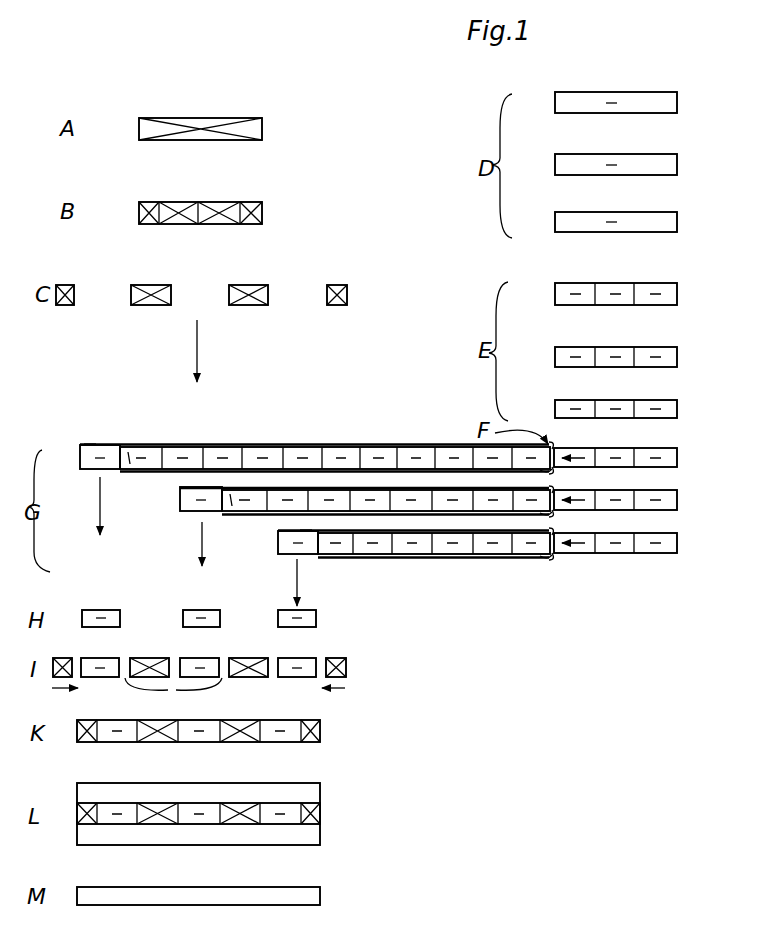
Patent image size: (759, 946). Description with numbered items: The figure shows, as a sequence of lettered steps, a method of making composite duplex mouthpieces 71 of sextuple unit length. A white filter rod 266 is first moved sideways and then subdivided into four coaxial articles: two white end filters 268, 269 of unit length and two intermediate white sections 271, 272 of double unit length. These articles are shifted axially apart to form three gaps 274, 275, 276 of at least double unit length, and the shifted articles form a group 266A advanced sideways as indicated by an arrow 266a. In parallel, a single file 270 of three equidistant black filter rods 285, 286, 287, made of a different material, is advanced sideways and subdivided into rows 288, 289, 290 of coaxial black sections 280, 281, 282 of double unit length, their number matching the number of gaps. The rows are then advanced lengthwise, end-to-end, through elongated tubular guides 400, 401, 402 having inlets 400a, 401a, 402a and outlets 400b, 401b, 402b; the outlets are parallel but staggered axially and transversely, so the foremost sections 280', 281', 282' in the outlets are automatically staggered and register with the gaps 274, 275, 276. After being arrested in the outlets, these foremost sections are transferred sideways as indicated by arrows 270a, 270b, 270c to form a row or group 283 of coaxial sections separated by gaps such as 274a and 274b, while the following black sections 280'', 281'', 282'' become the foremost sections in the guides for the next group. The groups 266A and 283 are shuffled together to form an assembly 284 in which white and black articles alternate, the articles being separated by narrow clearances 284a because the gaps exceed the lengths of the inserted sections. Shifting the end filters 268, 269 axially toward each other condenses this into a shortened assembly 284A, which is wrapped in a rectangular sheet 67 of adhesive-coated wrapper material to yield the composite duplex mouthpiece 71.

The white filter rod 266 is at (209, 122).
The white end filter 268 is at (148, 205).
The intermediate white section 271 is at (180, 210).
The intermediate white section 272 is at (221, 211).
The white end filter 269 is at (252, 208).
The gap 274 is at (119, 304).
The gap 275 is at (219, 304).
The gap 276 is at (316, 304).
The group of white rod-like articles 266A is at (362, 296).
The arrow 266a is at (200, 346).
The single file of black filter rods 270 is at (595, 140).
The black filter rod 285 is at (558, 102).
The black filter rod 286 is at (558, 164).
The black filter rod 287 is at (558, 222).
The stack or row of black sections 288 is at (552, 304).
The stack or row of black sections 289 is at (552, 366).
The stack or row of black sections 290 is at (552, 418).
The black section 280 is at (622, 355).
The black section 281 is at (615, 453).
The black section 282 is at (618, 481).
The foremost black section 280' is at (83, 561).
The foremost black section 281' is at (174, 582).
The foremost black section 282' is at (272, 542).
The next black section 280'' is at (147, 442).
The next black section 281'' is at (239, 463).
The next black section 282'' is at (331, 614).
The elongated tubular guide 400 is at (340, 444).
The elongated tubular guide 401 is at (273, 478).
The elongated tubular guide 402 is at (458, 562).
The guide inlet 400a is at (547, 473).
The guide inlet 401a is at (547, 518).
The guide inlet 402a is at (547, 559).
The guide outlet 400b is at (88, 447).
The guide outlet 401b is at (192, 490).
The guide outlet 402b is at (307, 532).
The arrow 270a is at (100, 527).
The arrow 270b is at (200, 547).
The arrow 270c is at (295, 583).
The gap 274a is at (175, 626).
The gap 274b is at (271, 626).
The row or group of black sections 283 is at (338, 619).
The assembly 284 is at (364, 668).
The clearance 284a is at (173, 692).
The condensed assembly 284A is at (332, 733).
The sheet of wrapper material 67 is at (317, 794).
The composite duplex mouthpiece 71 is at (314, 889).